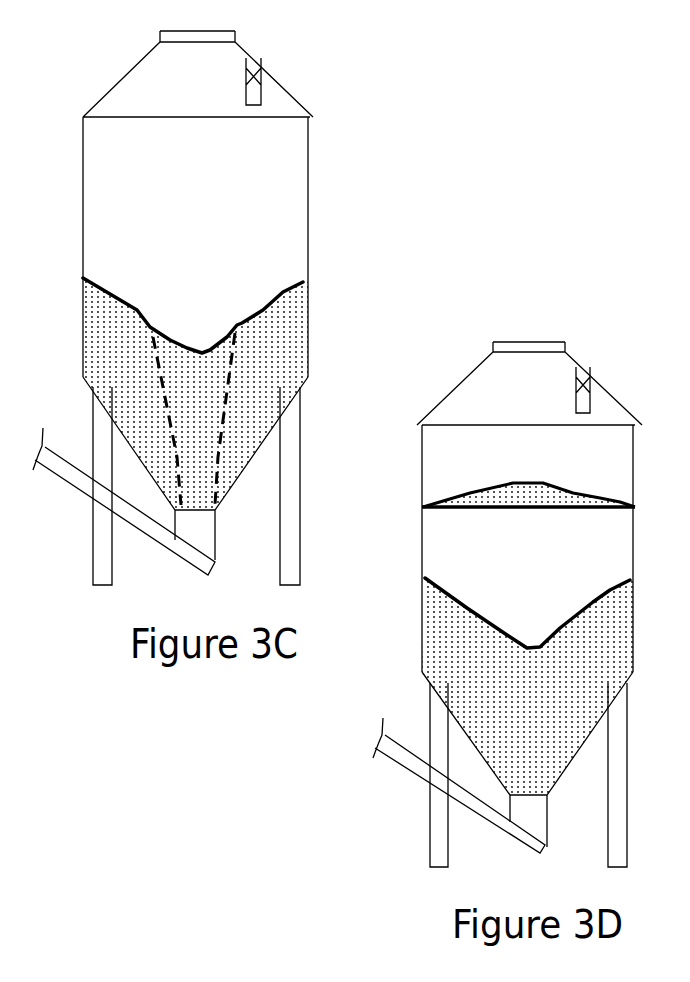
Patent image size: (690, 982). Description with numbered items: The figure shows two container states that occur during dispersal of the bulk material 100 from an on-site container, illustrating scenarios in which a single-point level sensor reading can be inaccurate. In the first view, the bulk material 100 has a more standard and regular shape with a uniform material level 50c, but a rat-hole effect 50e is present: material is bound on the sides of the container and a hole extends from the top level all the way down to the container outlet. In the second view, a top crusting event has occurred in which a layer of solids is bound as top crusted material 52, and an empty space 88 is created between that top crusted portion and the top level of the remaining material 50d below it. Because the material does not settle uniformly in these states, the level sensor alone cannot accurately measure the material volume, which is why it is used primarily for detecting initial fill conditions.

In FIG. 3C, the uniform material level 50c is at (264, 284).
In FIG. 3D, the top level of the remaining material 50d is at (445, 571).
In FIG. 3C, the rat-hole effect 50e is at (153, 348).
In FIG. 3D, the top crusted material 52 is at (472, 493).
In FIG. 3D, the empty space 88 is at (612, 542).
In FIG. 3C, the bulk material 100 is at (280, 343).
In FIG. 3D, the bulk material 100 is at (458, 650).